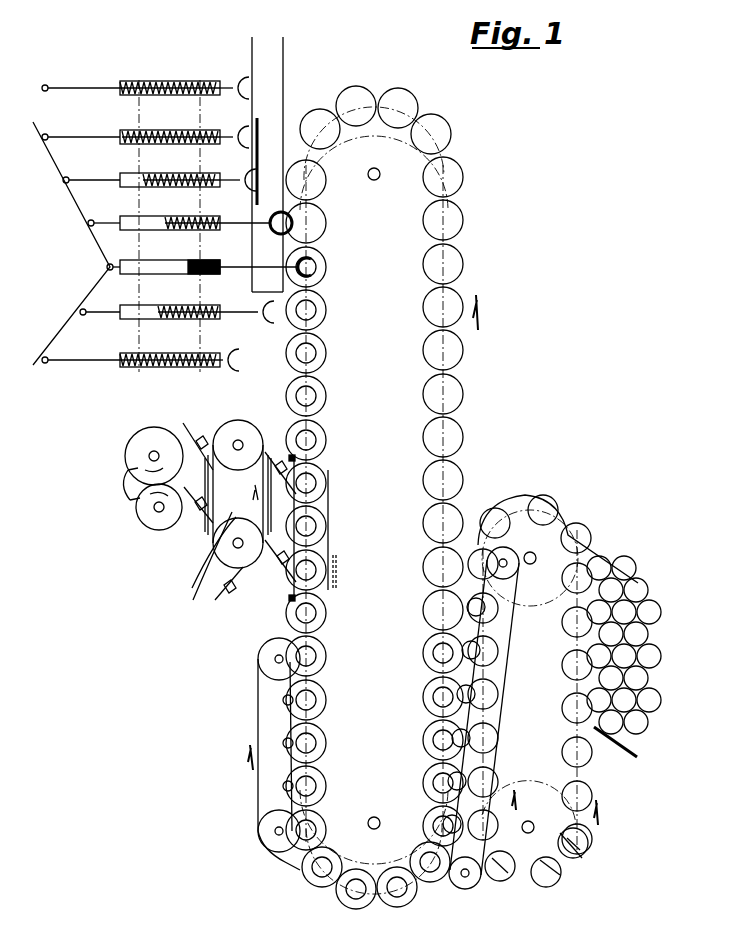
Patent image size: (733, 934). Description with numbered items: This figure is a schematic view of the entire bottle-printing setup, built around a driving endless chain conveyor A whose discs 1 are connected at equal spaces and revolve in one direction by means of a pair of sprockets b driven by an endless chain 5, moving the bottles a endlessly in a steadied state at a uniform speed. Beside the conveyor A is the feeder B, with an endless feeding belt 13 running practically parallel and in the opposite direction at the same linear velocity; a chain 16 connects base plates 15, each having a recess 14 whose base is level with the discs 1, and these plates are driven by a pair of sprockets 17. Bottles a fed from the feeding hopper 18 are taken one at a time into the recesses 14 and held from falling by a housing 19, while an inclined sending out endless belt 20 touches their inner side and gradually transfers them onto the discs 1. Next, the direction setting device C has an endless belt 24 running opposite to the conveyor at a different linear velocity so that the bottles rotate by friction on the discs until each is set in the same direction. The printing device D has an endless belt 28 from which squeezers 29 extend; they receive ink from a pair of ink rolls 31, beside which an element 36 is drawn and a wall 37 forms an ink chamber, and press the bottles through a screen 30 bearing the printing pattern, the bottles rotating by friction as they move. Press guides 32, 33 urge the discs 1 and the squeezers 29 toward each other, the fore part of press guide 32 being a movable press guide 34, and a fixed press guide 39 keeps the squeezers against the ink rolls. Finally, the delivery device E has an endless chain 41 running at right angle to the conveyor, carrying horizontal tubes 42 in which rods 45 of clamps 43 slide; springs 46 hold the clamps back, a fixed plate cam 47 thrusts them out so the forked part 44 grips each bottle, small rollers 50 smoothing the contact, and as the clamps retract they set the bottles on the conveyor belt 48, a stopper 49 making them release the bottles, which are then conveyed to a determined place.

The discs 1 is at (455, 468).
The driving endless chain conveyor A is at (459, 389).
The feeder B is at (546, 715).
The direction setting device C is at (278, 762).
The printing device D is at (184, 620).
The device for delivering the articles that have been printed E is at (159, 221).
The bottles a is at (272, 38).
The sprocket wheels b is at (377, 246).
The endless chain 5 is at (445, 515).
The endless feeding belt 13 is at (563, 864).
The recess 14 is at (585, 848).
The base plates 15 is at (582, 856).
The chain 16 is at (520, 880).
The sprockets 17 is at (543, 598).
The feeding hopper 18 is at (612, 570).
The housing 19 is at (574, 514).
The sending out endless belt 20 is at (510, 640).
The endless belt 24 is at (257, 712).
The endless belt 28 is at (205, 542).
The squeezers 29 is at (232, 588).
The screen 30 is at (291, 597).
The ink rolls 31 is at (144, 522).
The press guide 32 is at (329, 510).
The press guide 33 is at (280, 560).
The movable press guide 34 is at (330, 585).
The bracket 36 is at (132, 490).
The ink chamber wall 37 is at (126, 484).
The fixed press guide 39 is at (200, 520).
The endless chain 41 is at (201, 348).
The tubes 42 is at (180, 364).
The clamps 43 is at (112, 362).
The forked part 44 is at (240, 367).
The rods 45 is at (80, 362).
The springs 46 is at (145, 366).
The fixed plate cam 47 is at (58, 330).
The conveyor belt 48 is at (284, 75).
The stopper 49 is at (258, 118).
The small rollers 50 is at (44, 364).